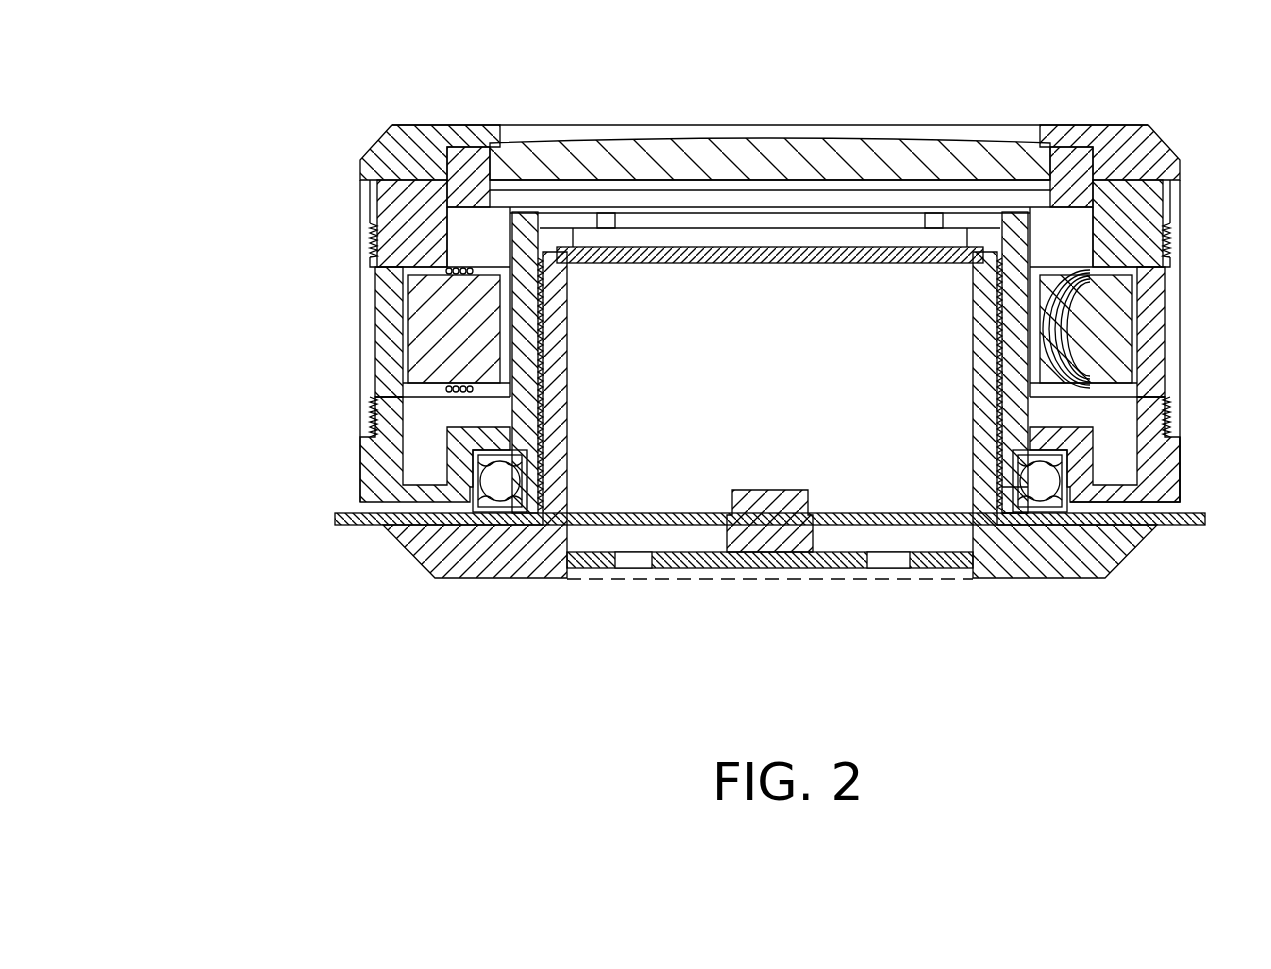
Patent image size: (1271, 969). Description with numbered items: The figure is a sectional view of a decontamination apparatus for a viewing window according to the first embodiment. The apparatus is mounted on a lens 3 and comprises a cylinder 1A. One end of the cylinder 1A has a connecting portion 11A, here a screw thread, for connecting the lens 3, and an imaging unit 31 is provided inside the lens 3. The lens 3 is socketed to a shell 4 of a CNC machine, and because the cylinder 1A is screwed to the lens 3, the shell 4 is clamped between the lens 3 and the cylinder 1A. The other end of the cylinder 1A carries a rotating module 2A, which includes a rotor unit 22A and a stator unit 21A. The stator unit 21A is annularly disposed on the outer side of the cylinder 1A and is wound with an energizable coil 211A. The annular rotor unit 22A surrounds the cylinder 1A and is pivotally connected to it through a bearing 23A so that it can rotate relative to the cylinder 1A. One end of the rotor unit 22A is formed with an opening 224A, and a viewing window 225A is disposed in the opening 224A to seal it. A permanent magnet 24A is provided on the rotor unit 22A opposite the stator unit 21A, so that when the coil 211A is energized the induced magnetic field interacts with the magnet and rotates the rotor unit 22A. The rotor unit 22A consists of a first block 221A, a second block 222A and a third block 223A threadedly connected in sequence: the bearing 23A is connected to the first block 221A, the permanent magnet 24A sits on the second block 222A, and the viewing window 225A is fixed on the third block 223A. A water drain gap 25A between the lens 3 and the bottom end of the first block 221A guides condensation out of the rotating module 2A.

The cylinder 1A is at (1022, 240).
The rotating module 2A is at (180, 268).
The lens 3 is at (1112, 569).
The shell 4 is at (1167, 525).
The connecting portion 11A is at (1000, 513).
The stator unit 21A is at (438, 378).
The rotor unit 22A is at (265, 127).
The bearing 23A is at (498, 495).
The permanent magnet 24A is at (383, 337).
The water drain gap 25A is at (1157, 508).
The imaging unit 31 is at (803, 515).
The coil 211A is at (460, 268).
The first block 221A is at (360, 477).
The second block 222A is at (360, 264).
The third block 223A is at (385, 160).
The opening 224A is at (484, 150).
The viewing window 225A is at (790, 152).